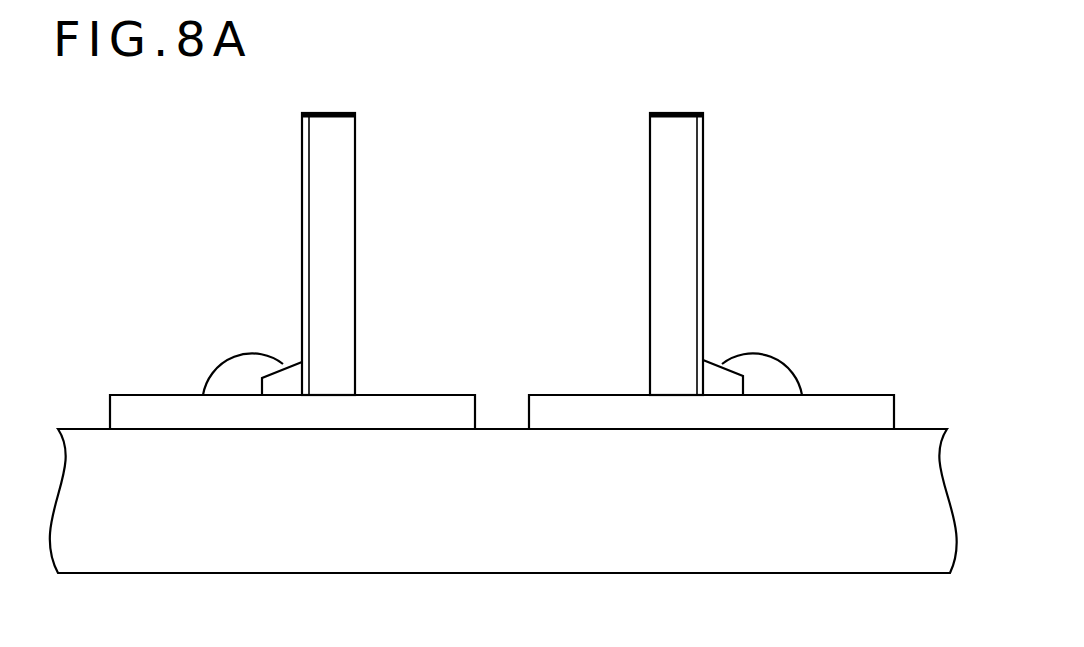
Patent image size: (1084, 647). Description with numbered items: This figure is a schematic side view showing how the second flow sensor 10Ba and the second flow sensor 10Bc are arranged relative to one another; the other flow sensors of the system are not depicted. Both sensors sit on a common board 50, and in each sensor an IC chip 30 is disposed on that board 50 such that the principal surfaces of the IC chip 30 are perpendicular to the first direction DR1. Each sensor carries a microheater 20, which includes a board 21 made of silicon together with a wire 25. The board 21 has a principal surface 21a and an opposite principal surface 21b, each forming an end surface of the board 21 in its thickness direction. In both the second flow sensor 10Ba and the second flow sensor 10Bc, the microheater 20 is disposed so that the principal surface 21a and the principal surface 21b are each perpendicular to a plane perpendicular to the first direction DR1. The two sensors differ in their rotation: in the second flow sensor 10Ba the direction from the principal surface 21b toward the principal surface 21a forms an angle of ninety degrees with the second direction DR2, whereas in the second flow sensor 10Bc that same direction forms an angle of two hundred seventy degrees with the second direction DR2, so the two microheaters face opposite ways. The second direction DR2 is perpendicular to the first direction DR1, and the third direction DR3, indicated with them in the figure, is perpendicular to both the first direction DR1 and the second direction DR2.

The second flow sensor 10Ba is at (245, 276).
The second flow sensor 10Bc is at (754, 278).
The microheater 20 is at (374, 318).
The board 21 is at (332, 118).
The principal surface 21a is at (309, 191).
The principal surface 21b is at (355, 130).
The wire 25 is at (304, 155).
The IC chip 30 is at (273, 415).
The board 50 is at (108, 553).
The first direction DR1 is at (898, 88).
The second direction DR2 is at (926, 84).
The third direction DR3 is at (893, 84).